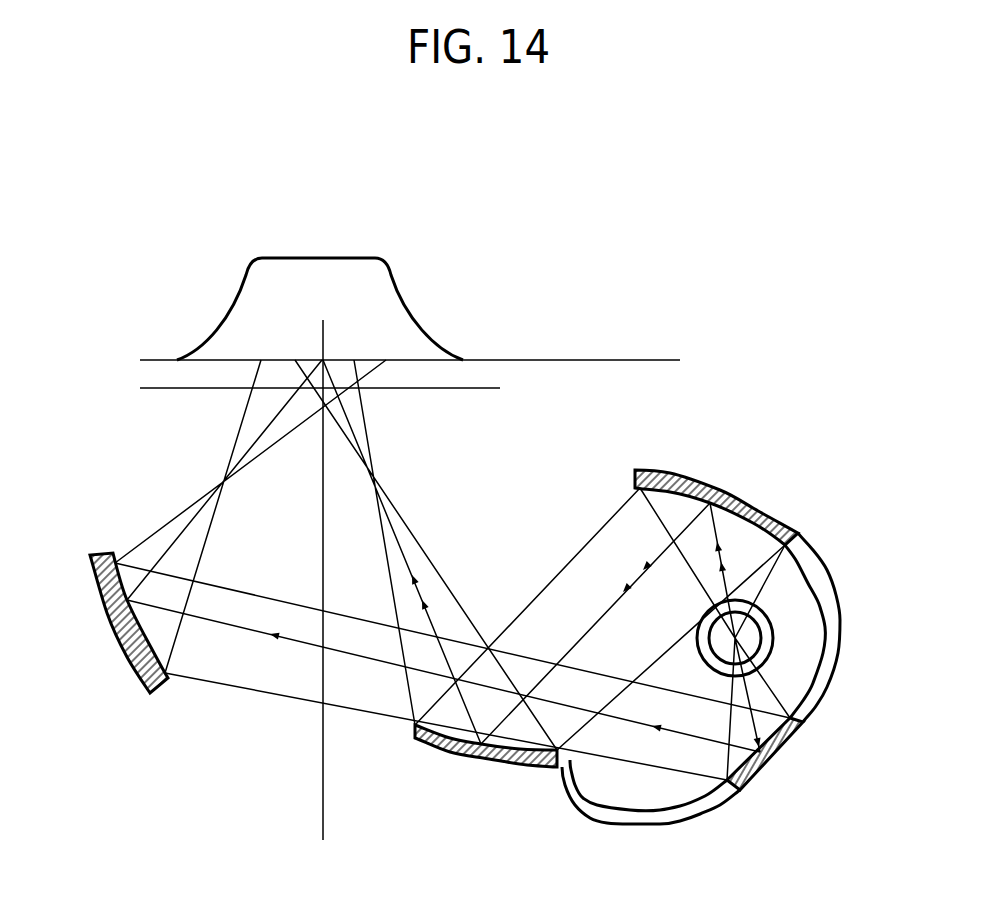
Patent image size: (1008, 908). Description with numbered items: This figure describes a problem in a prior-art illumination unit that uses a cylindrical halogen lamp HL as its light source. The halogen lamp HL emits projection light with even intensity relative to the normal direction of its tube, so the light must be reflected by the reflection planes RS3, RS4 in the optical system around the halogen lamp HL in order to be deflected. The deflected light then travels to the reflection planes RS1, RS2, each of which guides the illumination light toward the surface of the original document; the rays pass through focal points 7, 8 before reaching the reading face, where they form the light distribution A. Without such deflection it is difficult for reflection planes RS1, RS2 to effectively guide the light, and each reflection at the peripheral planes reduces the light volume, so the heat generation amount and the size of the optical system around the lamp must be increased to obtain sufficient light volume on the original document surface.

The light distribution pattern A is at (321, 256).
The focal point of first reflecting surface 7 is at (374, 476).
The focal point of second reflecting surface 8 is at (222, 481).
The reflection plane RS1 is at (481, 754).
The reflection plane RS2 is at (138, 648).
The reflection plane RS3 is at (680, 482).
The reflection plane RS4 is at (770, 757).
The halogen lamp HL is at (775, 643).